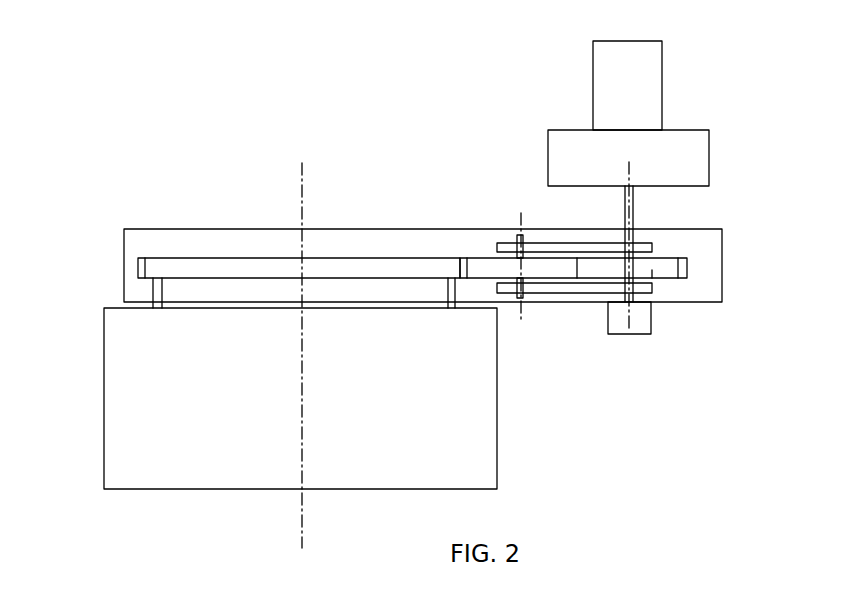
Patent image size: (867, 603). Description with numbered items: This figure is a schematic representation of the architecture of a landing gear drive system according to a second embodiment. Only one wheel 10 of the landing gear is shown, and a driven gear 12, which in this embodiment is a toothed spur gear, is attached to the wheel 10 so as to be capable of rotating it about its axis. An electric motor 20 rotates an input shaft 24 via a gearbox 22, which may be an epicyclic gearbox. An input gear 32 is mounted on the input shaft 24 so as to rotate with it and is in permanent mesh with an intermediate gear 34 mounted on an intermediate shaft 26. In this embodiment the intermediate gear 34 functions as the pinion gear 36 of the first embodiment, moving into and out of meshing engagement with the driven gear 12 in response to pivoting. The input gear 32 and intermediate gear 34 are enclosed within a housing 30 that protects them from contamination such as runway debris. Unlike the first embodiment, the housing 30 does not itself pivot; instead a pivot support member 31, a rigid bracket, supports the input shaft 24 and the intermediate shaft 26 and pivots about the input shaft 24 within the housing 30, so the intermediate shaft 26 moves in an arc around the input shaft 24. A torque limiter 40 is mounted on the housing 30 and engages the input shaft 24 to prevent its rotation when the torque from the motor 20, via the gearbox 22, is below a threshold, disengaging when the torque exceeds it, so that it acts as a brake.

The wheel 10 is at (103, 373).
The driven gear 12 is at (180, 258).
The electric motor 20 is at (662, 80).
The gearbox 22 is at (709, 150).
The input shaft 24 is at (633, 213).
The intermediate shaft 26 is at (517, 242).
The housing 30 is at (720, 265).
The pivot support member 31 is at (553, 243).
The input gear 32 is at (667, 278).
The intermediate gear 34 is at (542, 229).
The pinion gear 36 is at (480, 258).
The torque limiter 40 is at (631, 334).